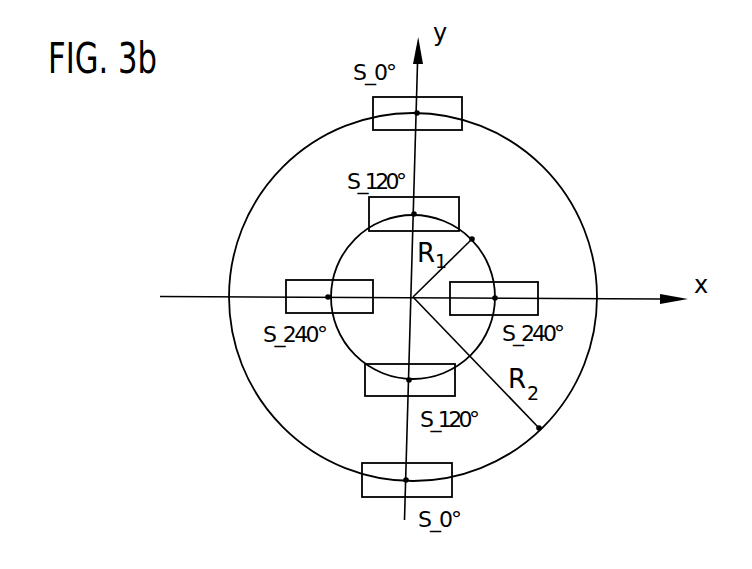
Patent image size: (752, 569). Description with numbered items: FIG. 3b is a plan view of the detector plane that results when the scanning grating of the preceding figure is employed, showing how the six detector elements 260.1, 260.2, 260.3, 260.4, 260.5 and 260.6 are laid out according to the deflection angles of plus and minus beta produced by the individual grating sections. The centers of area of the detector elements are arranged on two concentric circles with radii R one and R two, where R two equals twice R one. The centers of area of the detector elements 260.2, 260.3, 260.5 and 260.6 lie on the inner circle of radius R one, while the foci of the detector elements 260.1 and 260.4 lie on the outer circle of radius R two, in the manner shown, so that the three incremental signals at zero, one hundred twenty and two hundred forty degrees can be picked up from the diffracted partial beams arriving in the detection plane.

The detector element 260.1 is at (447, 102).
The detector element 260.2 is at (422, 205).
The detector element 260.3 is at (510, 290).
The detector element 260.4 is at (382, 488).
The detector element 260.5 is at (380, 385).
The detector element 260.6 is at (303, 288).